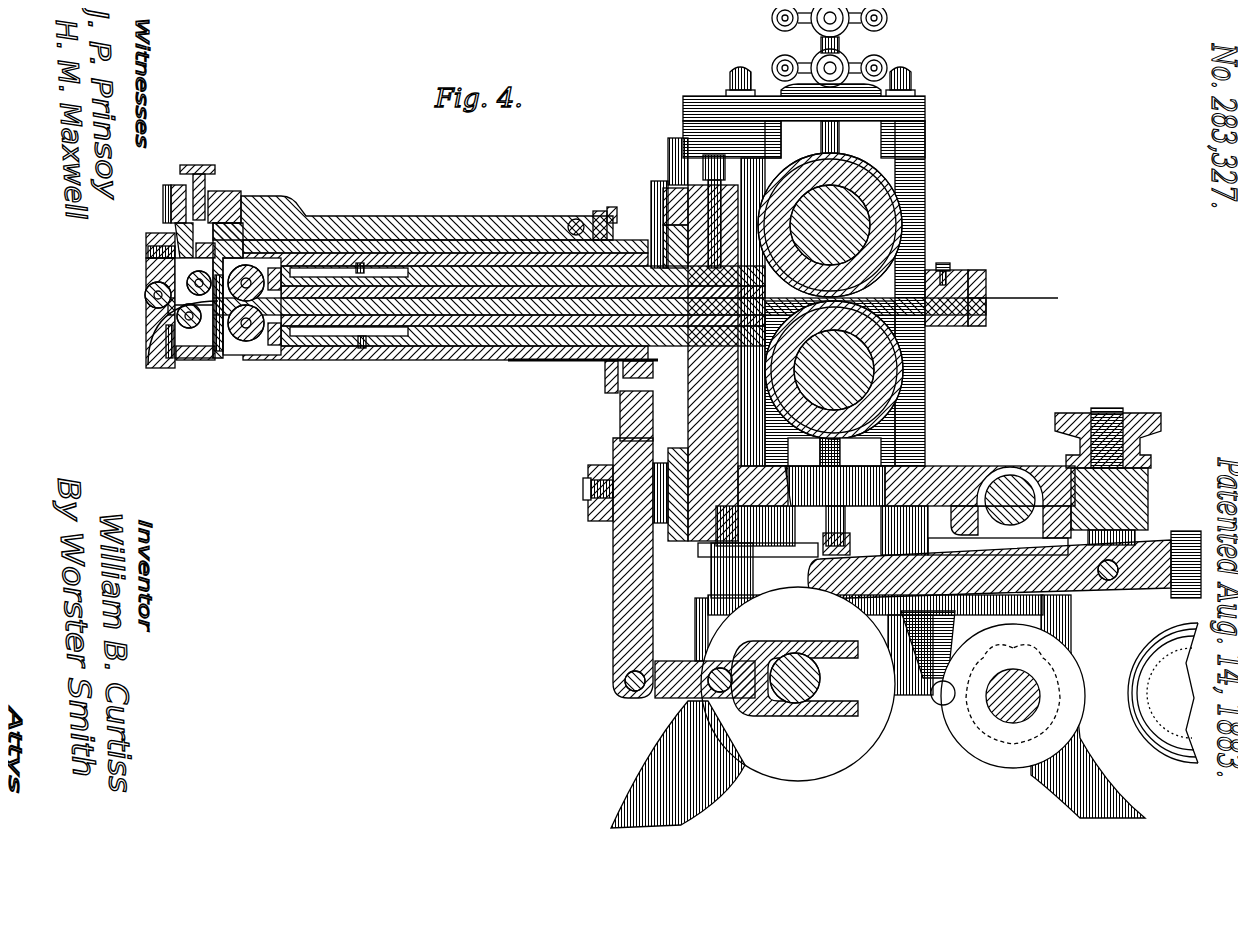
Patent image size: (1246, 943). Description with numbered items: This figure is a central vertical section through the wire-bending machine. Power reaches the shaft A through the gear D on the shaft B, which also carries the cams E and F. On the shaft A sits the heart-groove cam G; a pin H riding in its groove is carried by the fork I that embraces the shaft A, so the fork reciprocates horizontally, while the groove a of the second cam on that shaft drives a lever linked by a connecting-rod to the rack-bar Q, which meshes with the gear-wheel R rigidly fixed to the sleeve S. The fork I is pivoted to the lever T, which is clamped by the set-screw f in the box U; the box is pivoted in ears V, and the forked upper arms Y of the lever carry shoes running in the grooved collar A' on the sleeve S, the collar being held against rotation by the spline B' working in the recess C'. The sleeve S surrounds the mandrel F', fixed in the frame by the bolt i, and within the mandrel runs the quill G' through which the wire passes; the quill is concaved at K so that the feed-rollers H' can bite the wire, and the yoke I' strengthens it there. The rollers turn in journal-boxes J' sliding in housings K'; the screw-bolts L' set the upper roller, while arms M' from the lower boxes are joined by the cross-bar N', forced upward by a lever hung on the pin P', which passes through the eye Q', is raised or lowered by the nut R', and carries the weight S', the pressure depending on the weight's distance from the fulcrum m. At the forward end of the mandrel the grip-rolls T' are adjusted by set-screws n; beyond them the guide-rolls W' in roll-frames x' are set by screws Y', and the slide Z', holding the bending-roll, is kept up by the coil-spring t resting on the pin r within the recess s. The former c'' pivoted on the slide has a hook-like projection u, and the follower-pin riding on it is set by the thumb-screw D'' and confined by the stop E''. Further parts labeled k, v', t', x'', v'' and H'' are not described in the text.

The screw-bolts L' is at (841, 83).
The housings K' is at (842, 112).
The journal-boxes J' is at (856, 293).
The feed-rollers H' is at (876, 296).
The set screw k is at (940, 256).
The yoke I' is at (1010, 242).
The quill G' is at (613, 289).
The bolt i is at (650, 150).
The rack-bar Q is at (656, 149).
The grooved collar A' is at (645, 203).
The gear D is at (415, 204).
The mandrel F' is at (494, 263).
The grip-rolls T' is at (465, 429).
The slot v' is at (349, 291).
The set-screws n is at (352, 255).
The thumb-screw D'' is at (219, 171).
The stop E'' is at (247, 187).
The bracket t' is at (161, 198).
The block x'' is at (145, 241).
The former c'' is at (188, 240).
The hook-like projection u is at (190, 250).
The pin v'' is at (130, 267).
The head block H'' is at (156, 313).
The coil-spring t is at (134, 330).
The slide Z' is at (160, 342).
The recess s is at (150, 360).
The pin r is at (170, 352).
The guide-rolls W' is at (180, 393).
The roll-frames x' is at (209, 396).
The lever T is at (228, 312).
The heart-groove cam G is at (249, 333).
The screws Y' is at (256, 392).
The cam F is at (752, 521).
The sleeve S is at (464, 383).
The spline B' is at (558, 376).
The recess C' is at (600, 397).
The arms Y is at (602, 417).
The gear-wheel R is at (672, 473).
The ears V is at (652, 470).
The concaved portion of quill K is at (738, 348).
The arms M' is at (835, 471).
The box U is at (578, 468).
The set-screw f is at (580, 488).
The cross-bar N' is at (883, 600).
The groove a is at (1005, 467).
The nut R' is at (1111, 416).
The eye Q' is at (1132, 490).
The pin P' is at (1137, 520).
The fulcrum m is at (1104, 572).
The cam E is at (1091, 706).
The shaft B is at (1008, 696).
The weight S' is at (1163, 693).
The fork I is at (796, 678).
The pin H is at (686, 710).
The shaft A is at (878, 707).